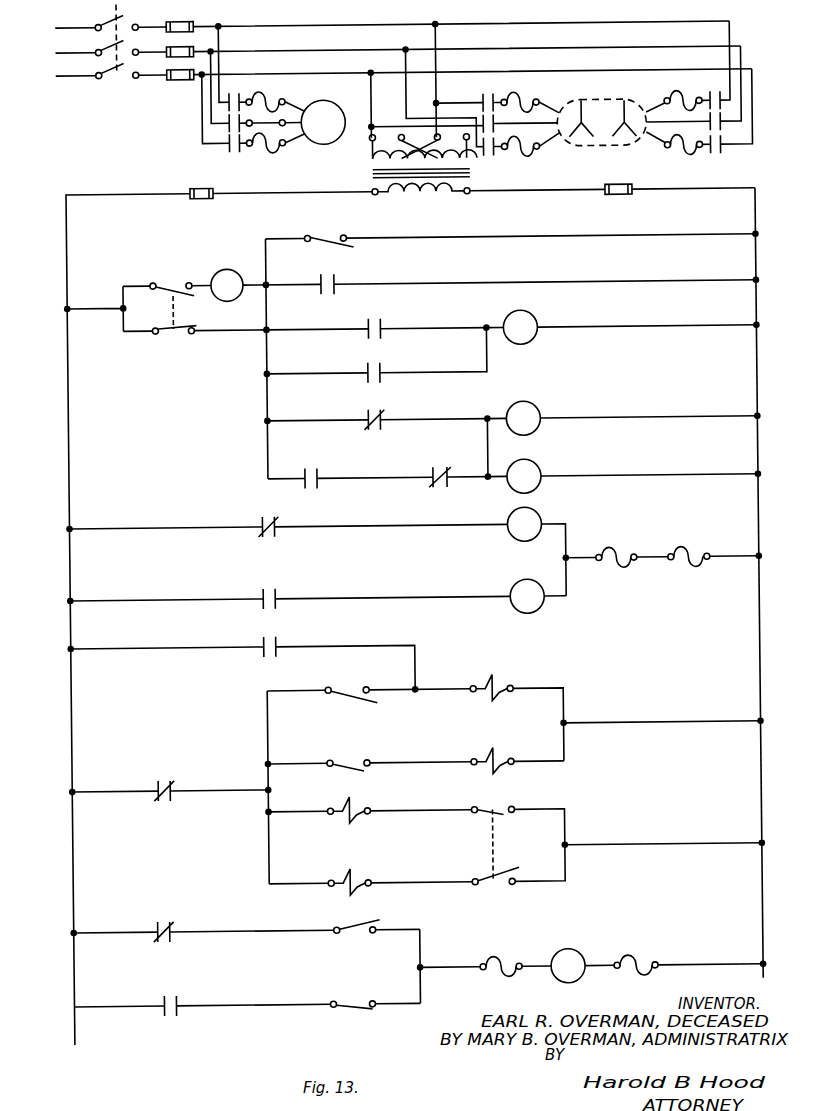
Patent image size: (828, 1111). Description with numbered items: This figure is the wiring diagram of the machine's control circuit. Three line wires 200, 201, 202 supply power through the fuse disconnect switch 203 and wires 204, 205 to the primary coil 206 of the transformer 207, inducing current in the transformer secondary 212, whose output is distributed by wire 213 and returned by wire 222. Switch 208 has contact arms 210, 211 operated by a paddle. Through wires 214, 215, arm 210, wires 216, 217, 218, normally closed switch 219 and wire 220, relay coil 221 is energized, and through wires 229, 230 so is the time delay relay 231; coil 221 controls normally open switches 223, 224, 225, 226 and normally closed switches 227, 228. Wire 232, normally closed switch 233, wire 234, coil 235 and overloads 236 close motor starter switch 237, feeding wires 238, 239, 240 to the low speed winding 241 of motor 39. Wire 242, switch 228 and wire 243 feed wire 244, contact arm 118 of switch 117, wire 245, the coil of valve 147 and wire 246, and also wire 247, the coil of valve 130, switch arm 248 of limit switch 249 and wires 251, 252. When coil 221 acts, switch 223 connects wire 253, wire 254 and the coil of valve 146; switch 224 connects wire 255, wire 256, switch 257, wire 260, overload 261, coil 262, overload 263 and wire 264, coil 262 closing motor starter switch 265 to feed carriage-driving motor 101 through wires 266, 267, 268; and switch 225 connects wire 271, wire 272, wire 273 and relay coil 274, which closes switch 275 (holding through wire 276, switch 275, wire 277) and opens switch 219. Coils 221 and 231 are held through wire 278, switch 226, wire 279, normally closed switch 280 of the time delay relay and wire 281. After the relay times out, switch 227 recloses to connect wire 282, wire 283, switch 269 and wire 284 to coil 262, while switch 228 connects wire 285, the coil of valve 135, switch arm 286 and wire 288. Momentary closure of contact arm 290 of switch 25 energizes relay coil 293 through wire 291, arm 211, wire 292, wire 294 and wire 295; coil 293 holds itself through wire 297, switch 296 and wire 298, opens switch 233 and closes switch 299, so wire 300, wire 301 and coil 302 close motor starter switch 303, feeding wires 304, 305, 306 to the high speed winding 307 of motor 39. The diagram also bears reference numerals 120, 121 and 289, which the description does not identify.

The line wire 200 is at (58, 27).
The line wire 201 is at (60, 52).
The line wire 202 is at (58, 78).
The fuse disconnect switch 203 is at (118, 80).
The wire 204 is at (437, 33).
The wire 205 is at (372, 98).
The primary coil 206 is at (372, 160).
The transformer 207 is at (370, 177).
The switch 208 is at (147, 278).
The contact arm 210 is at (178, 336).
The contact arm 211 is at (172, 290).
The transformer secondary 212 is at (416, 200).
The wire 213 is at (70, 221).
The wire 214 is at (88, 309).
The wire 215 is at (122, 334).
The wire 216 is at (233, 332).
The wire 217 is at (265, 394).
The wire 218 is at (317, 421).
The normally closed switch 219 is at (374, 432).
The wire 220 is at (435, 421).
The relay coil 221 is at (527, 405).
The wire 222 is at (755, 375).
The normally open switch 223 is at (268, 654).
The normally open switch 224 is at (172, 1018).
The normally open switch 225 is at (373, 383).
The normally open switch 226 is at (312, 493).
The normally closed switch 227 is at (166, 922).
The normally closed switch 228 is at (167, 781).
The wire 229 is at (485, 446).
The wire 230 is at (498, 483).
The time delay relay 231 is at (538, 472).
The wire 232 is at (143, 527).
The normally closed switch 233 is at (268, 541).
The wire 234 is at (425, 531).
The coil 235 is at (538, 514).
The overloads 236 is at (653, 545).
The motor starter switch 237 is at (490, 97).
The wire 238 is at (460, 105).
The wire 239 is at (403, 88).
The wire 240 is at (390, 128).
The low speed winding 241 is at (583, 102).
The wire 242 is at (103, 790).
The wire 243 is at (213, 790).
The wire 244 is at (300, 764).
The wire 245 is at (428, 769).
The wire 246 is at (648, 720).
The wire 247 is at (292, 812).
The switch arm 248 is at (497, 817).
The limit switch 249 is at (483, 846).
The wire 251 is at (549, 812).
The wire 252 is at (624, 847).
The wire 253 is at (130, 647).
The wire 254 is at (325, 647).
The wire 255 is at (108, 1006).
The wire 256 is at (220, 1006).
The switch 257 is at (355, 1014).
The wire 260 is at (410, 1004).
The overload 261 is at (497, 958).
The coil 262 is at (573, 952).
The overload 263 is at (631, 957).
The wire 264 is at (705, 965).
The motor starter switch 265 is at (241, 97).
The wire 266 is at (222, 38).
The wire 267 is at (210, 62).
The wire 268 is at (203, 125).
The switch 269 is at (355, 937).
The wire 271 is at (310, 374).
The wire 272 is at (415, 373).
The wire 273 is at (495, 323).
The relay coil 274 is at (536, 316).
The normally open switch 275 is at (373, 318).
The wire 276 is at (308, 330).
The wire 277 is at (422, 327).
The wire 278 is at (283, 478).
The wire 279 is at (382, 482).
The normally closed switch 280 is at (442, 492).
The wire 281 is at (467, 482).
The wire 282 is at (102, 931).
The wire 283 is at (213, 931).
The wire 284 is at (402, 928).
The wire 285 is at (292, 884).
The switch arm 286 is at (498, 886).
The wire 288 is at (543, 887).
The conductor 289 is at (292, 692).
The contact arm 290 is at (333, 246).
The wire 291 is at (147, 285).
The wire 292 is at (191, 281).
The relay coil 293 is at (232, 272).
The wire 294 is at (266, 250).
The wire 295 is at (402, 244).
The normally open switch 296 is at (326, 276).
The wire 297 is at (273, 289).
The wire 298 is at (455, 279).
The normally open switch 299 is at (272, 598).
The wire 300 is at (163, 598).
The wire 301 is at (382, 600).
The coil 302 is at (510, 612).
The motor starter switch 303 is at (712, 97).
The wire 304 is at (733, 32).
The wire 305 is at (744, 52).
The wire 306 is at (755, 128).
The high speed winding 307 is at (627, 102).
The switch 25 is at (342, 232).
The motor 39 is at (597, 150).
The carriage-driving motor 101 is at (318, 103).
The switch 117 is at (357, 762).
The contact arm 118 is at (358, 772).
The switch contact 120 is at (352, 689).
The switch blade 121 is at (347, 704).
The valve 130 is at (345, 822).
The valve 135 is at (348, 872).
The valve 146 is at (497, 681).
The valve 147 is at (495, 753).